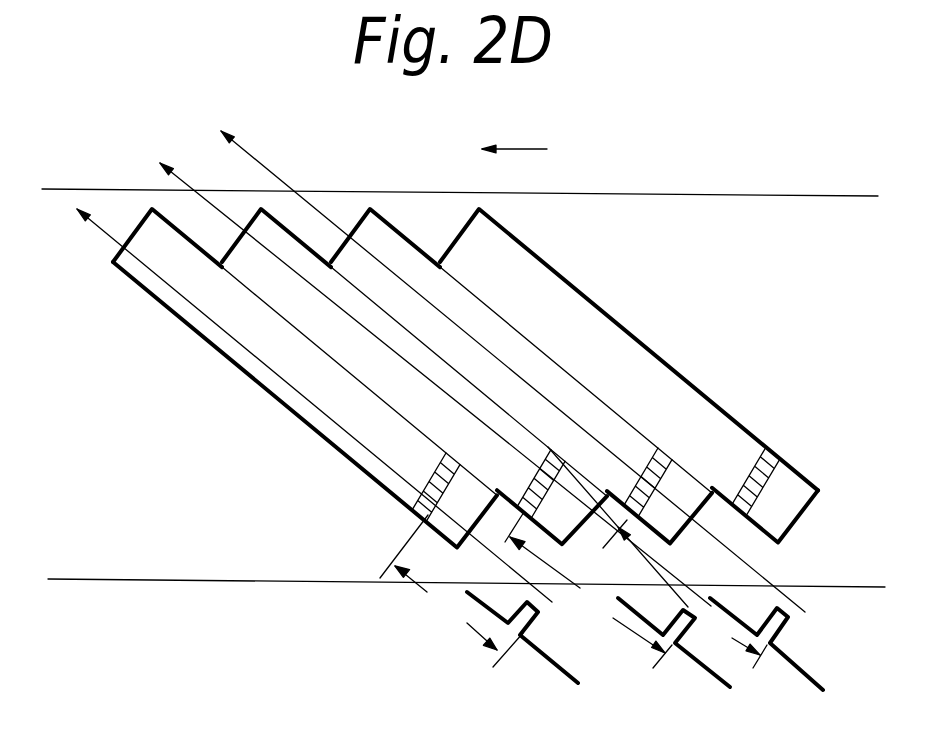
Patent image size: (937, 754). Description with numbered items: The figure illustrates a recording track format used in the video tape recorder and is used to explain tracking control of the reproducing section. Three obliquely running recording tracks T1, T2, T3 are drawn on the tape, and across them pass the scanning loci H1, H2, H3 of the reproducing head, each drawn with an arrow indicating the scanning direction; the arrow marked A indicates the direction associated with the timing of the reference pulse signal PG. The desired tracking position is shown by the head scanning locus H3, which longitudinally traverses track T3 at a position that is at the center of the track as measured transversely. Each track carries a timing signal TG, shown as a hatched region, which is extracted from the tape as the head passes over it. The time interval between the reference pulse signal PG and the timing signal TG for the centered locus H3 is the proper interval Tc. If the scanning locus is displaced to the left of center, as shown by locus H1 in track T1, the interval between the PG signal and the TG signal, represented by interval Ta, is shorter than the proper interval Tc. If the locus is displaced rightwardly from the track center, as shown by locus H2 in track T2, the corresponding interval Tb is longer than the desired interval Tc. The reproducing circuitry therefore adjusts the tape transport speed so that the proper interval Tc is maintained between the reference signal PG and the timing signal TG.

The track T1 is at (145, 230).
The track T2 is at (258, 228).
The track T3 is at (372, 228).
The head scanning locus H1 is at (185, 302).
The head scanning locus H2 is at (330, 298).
The head scanning locus H3 is at (398, 277).
The timing signal TG is at (795, 420).
The trace A is at (547, 149).
The interval Ta is at (451, 591).
The interval Tb is at (588, 590).
The interval Tc is at (657, 557).
The reference pulse signal PG is at (525, 653).